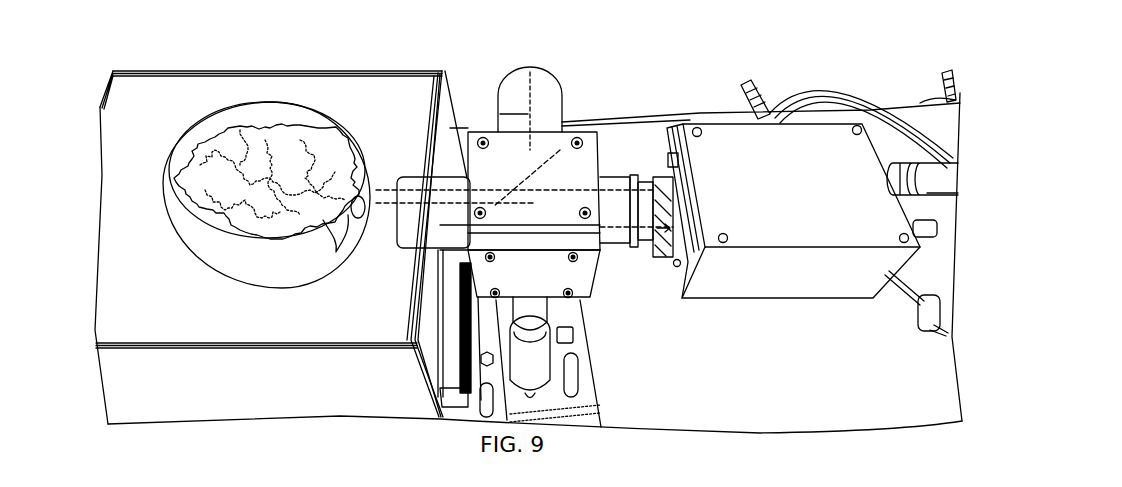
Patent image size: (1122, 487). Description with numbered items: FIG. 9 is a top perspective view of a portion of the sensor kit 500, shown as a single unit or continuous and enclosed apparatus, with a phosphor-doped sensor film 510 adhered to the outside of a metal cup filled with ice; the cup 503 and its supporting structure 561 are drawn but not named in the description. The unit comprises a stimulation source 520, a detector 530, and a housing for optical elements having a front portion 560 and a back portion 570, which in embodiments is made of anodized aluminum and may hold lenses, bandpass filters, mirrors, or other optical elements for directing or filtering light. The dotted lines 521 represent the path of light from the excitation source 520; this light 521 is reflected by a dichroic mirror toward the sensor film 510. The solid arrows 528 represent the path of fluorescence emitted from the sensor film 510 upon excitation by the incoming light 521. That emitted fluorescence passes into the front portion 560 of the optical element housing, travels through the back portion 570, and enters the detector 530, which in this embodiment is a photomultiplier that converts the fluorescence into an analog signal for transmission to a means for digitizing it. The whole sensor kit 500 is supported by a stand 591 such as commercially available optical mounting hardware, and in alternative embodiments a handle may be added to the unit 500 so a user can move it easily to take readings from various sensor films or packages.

The sensor kit 500 is at (890, 73).
The container / bowl 503 is at (182, 174).
The sensor film 510 is at (342, 223).
The stimulation source 520 is at (547, 98).
The light path 521 is at (528, 114).
The fluorescence path 528 is at (391, 188).
The detector 530 is at (772, 281).
The front portion of optical element housing 560 is at (447, 228).
The mounting body 561 is at (535, 176).
The back portion of optical element housing 570 is at (650, 197).
The stand 591 is at (527, 353).